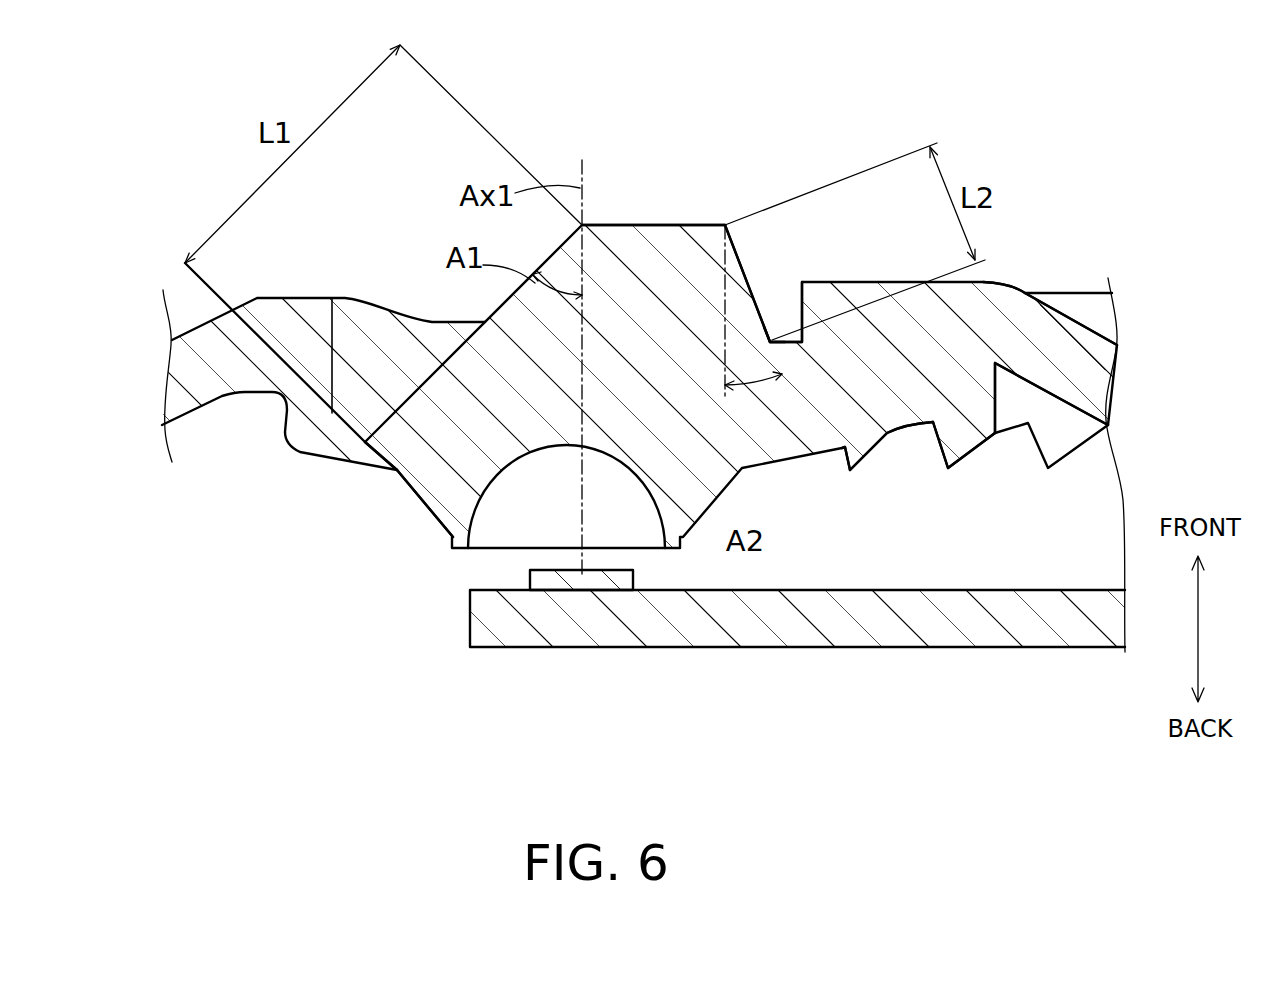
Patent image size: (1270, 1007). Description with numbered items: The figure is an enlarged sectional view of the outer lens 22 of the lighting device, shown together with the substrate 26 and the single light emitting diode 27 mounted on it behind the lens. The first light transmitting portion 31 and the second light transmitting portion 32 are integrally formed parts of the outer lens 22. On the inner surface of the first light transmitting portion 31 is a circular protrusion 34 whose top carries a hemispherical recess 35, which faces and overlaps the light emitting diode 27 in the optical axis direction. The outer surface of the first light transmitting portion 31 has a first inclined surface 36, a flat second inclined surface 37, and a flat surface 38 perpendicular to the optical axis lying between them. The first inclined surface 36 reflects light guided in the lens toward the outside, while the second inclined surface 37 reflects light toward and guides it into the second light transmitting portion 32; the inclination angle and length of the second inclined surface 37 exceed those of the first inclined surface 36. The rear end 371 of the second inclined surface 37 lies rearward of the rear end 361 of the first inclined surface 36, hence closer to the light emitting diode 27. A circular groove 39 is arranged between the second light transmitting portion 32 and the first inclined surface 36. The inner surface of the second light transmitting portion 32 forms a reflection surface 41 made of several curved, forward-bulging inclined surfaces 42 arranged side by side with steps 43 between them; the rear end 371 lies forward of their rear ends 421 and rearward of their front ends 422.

The outer lens 22 is at (795, 130).
The substrate 26 is at (688, 630).
The light emitting diode 27 is at (585, 578).
The first light transmitting portion 31 is at (625, 200).
The second light transmitting portion 32 is at (1057, 273).
The protrusion 34 is at (423, 507).
The recess 35 is at (482, 497).
The first inclined surface 36 is at (738, 256).
The second inclined surface 37 is at (432, 322).
The flat surface 38 is at (660, 225).
The groove 39 is at (788, 333).
The reflection surface 41 is at (1010, 405).
The inclined surfaces 42 is at (887, 433).
The steps 43 is at (933, 425).
The rear end of the first inclined surface 361 is at (775, 343).
The rear end of the second inclined surface 371 is at (365, 443).
The rear ends of the inclined surfaces 421 is at (850, 470).
The front ends of the inclined surfaces 422 is at (972, 447).